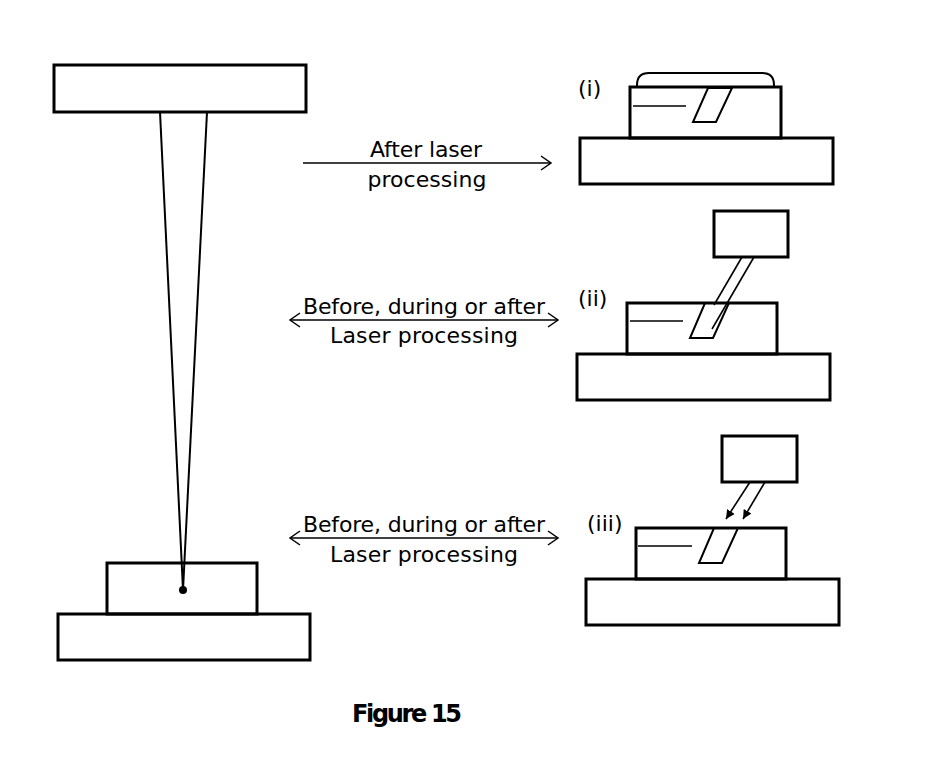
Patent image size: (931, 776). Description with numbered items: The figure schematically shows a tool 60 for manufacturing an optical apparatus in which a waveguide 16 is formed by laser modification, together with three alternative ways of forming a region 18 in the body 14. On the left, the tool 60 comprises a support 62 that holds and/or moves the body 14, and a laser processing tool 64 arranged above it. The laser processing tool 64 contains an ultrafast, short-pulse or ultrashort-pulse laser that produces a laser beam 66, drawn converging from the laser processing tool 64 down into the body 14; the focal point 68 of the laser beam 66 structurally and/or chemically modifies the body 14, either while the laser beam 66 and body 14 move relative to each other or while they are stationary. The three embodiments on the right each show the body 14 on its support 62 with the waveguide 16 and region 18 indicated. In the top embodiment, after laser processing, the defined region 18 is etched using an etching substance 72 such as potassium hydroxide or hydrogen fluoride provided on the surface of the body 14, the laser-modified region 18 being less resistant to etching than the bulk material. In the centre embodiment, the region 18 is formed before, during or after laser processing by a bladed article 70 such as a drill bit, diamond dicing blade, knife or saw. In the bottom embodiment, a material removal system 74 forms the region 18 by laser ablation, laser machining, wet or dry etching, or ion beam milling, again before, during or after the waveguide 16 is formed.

The tool 60 is at (51, 53).
The laser processing tool 64 is at (180, 88).
The laser beam 66 is at (192, 237).
The focal point 68 is at (179, 590).
The body 14 is at (243, 588).
The support 62 is at (448, 399).
The waveguide 16 is at (652, 102).
The region 18 is at (718, 102).
The etching substance 72 is at (758, 79).
The bladed article 70 is at (750, 270).
The material removal system 74 is at (759, 477).